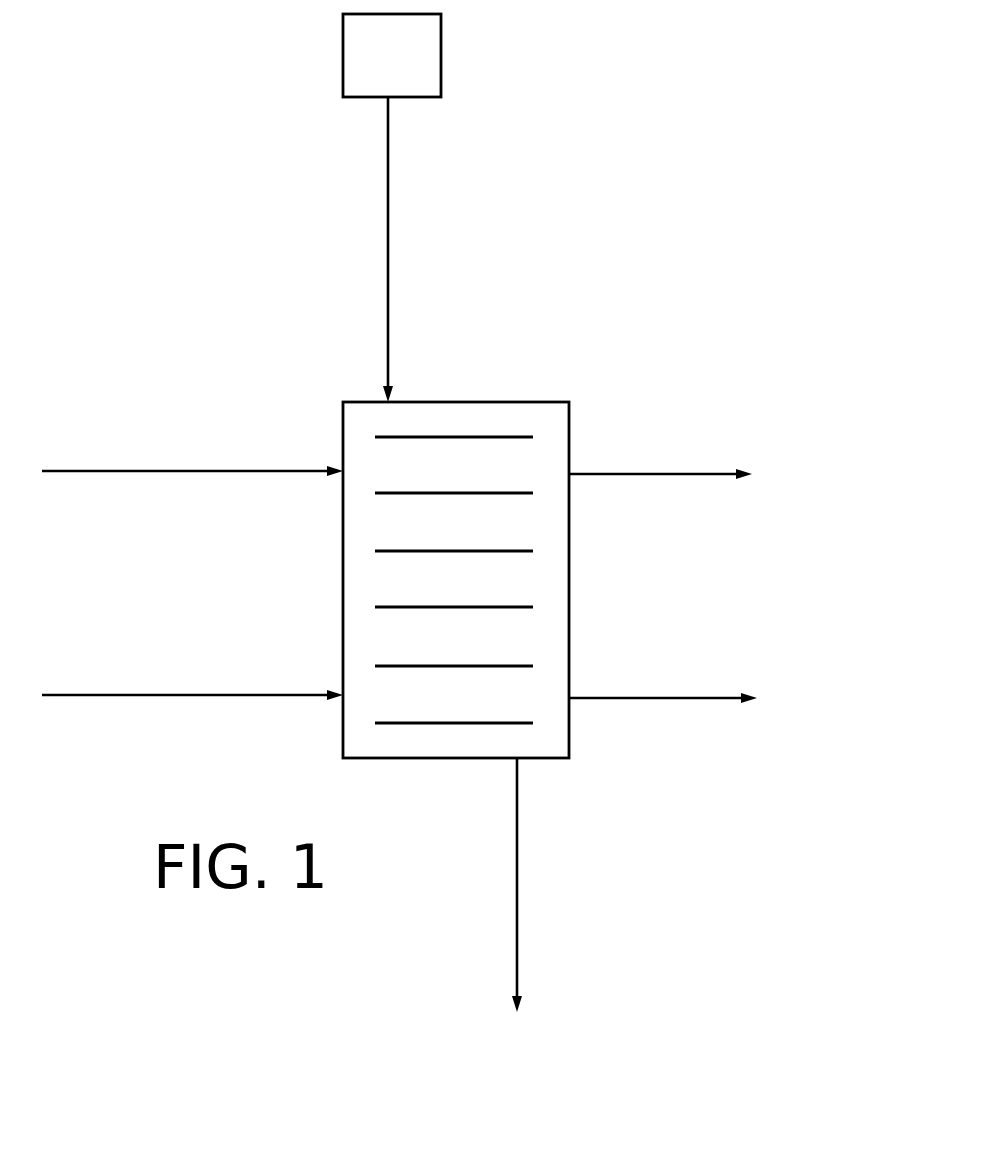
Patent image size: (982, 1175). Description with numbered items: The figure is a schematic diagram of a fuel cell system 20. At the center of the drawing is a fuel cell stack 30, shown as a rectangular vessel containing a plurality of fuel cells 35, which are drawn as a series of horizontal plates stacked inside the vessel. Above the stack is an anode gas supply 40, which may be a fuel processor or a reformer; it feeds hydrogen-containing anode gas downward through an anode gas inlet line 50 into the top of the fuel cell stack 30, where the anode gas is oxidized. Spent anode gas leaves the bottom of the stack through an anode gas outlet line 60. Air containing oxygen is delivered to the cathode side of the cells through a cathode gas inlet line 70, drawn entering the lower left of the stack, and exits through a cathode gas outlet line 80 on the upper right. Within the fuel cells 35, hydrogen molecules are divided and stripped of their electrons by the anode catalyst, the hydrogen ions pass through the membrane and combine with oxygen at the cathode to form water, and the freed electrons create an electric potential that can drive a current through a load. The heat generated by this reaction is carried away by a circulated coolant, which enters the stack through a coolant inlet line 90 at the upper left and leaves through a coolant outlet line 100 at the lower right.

The fuel cell system 20 is at (858, 193).
The fuel cell stack 30 is at (569, 568).
The fuel cells 35 is at (365, 551).
The anode gas supply 40 is at (443, 17).
The anode gas inlet line 50 is at (388, 186).
The anode gas outlet line 60 is at (517, 865).
The cathode gas inlet line 70 is at (125, 685).
The cathode gas outlet line 80 is at (692, 472).
The coolant inlet line 90 is at (138, 458).
The coolant outlet line 100 is at (697, 695).